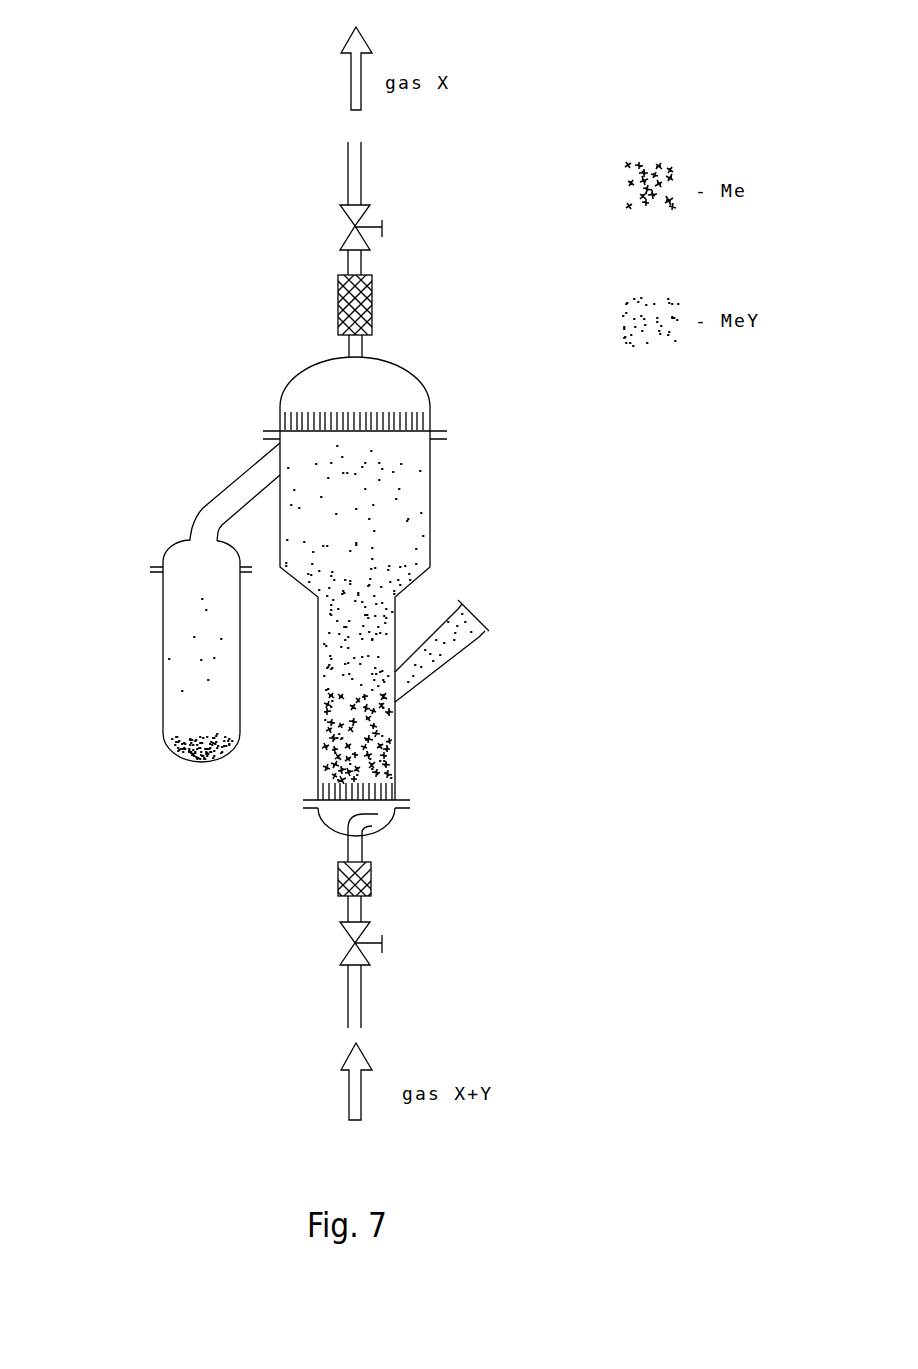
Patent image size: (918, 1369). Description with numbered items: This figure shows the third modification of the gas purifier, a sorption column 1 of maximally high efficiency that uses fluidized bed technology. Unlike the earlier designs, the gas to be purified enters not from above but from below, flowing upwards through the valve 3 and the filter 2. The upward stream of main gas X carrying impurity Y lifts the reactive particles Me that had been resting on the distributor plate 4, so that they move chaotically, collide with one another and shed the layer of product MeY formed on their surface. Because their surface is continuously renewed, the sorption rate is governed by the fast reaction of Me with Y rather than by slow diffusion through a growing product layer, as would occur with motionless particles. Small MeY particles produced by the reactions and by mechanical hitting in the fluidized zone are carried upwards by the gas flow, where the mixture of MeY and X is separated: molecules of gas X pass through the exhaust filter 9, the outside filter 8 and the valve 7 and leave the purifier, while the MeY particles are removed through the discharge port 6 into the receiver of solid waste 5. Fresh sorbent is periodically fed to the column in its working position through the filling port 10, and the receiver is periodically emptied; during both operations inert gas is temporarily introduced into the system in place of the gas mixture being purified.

The sorption column 1 is at (395, 739).
The filter 2 is at (372, 878).
The valve 3 is at (347, 940).
The distributor plate 4 is at (345, 800).
The receiver of solid waste 5 is at (162, 668).
The discharge port 6 is at (232, 485).
The valve 7 is at (345, 240).
The outside filter 8 is at (370, 300).
The exhaust filter 9 is at (390, 413).
The filling port 10 is at (443, 661).